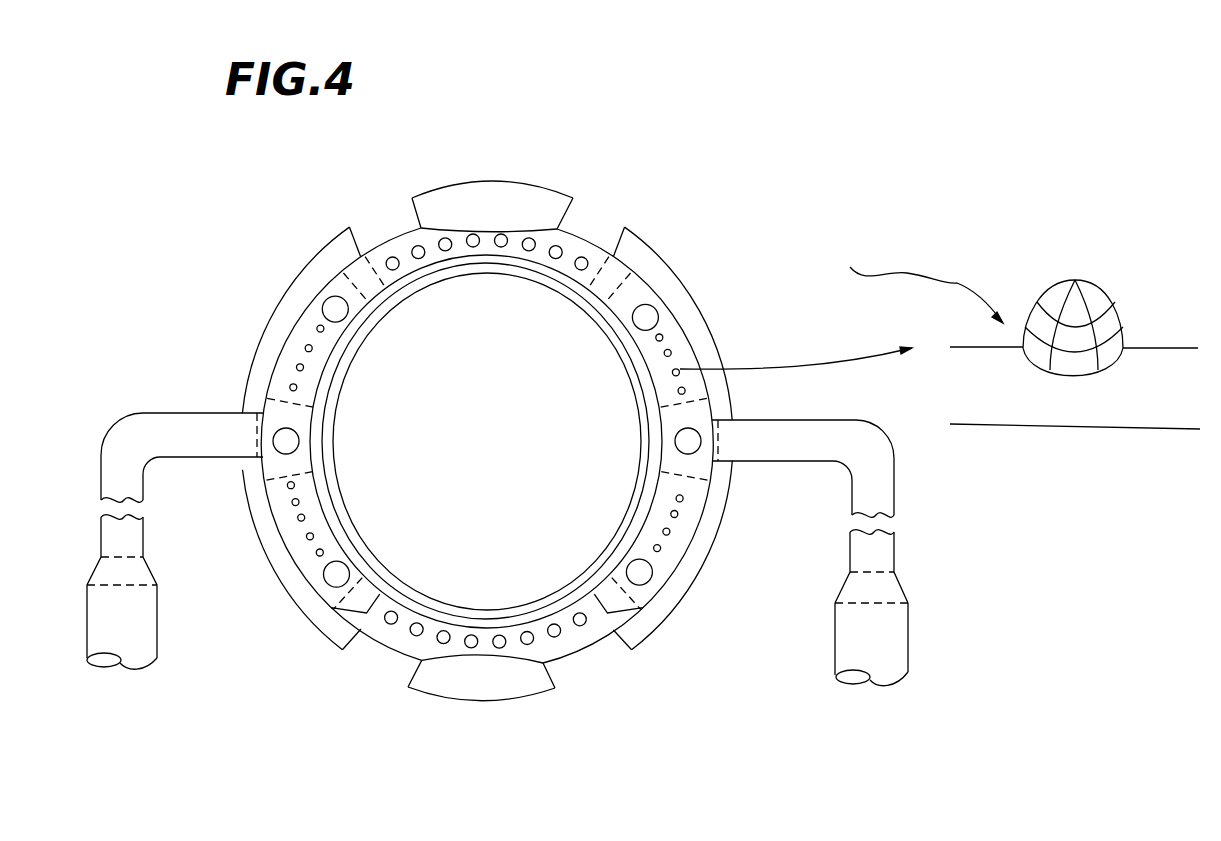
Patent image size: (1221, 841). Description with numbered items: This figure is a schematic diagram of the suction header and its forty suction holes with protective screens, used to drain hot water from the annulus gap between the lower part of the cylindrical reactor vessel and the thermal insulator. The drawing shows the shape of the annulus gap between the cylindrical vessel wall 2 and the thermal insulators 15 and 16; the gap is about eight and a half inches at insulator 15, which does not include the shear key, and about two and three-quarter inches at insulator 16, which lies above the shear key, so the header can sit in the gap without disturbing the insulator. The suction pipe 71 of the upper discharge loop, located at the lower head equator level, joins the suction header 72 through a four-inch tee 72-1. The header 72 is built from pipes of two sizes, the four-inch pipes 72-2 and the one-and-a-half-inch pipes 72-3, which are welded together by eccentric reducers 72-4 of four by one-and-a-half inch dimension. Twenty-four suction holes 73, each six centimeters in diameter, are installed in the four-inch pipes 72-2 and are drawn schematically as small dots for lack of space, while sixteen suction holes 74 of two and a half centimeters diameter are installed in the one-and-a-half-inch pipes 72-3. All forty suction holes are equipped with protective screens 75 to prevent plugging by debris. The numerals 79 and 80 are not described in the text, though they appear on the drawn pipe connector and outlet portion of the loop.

The cylindrical vessel wall 2 is at (603, 556).
The thermal insulator 15 is at (468, 700).
The thermal insulator 16 is at (592, 650).
The suction pipe 71 is at (150, 413).
The suction header 72 is at (280, 593).
The tee 72-1 is at (255, 432).
The 4-inch pipe 72-2 is at (288, 328).
The 1½-inch pipe 72-3 is at (395, 252).
The eccentric reducer 72-4 is at (633, 278).
The suction hole 73 is at (665, 294).
The suction hole 74 is at (501, 234).
The protective screen 75 is at (1123, 312).
The pipe connector 79 is at (900, 585).
The outlet pipe 80 is at (910, 645).